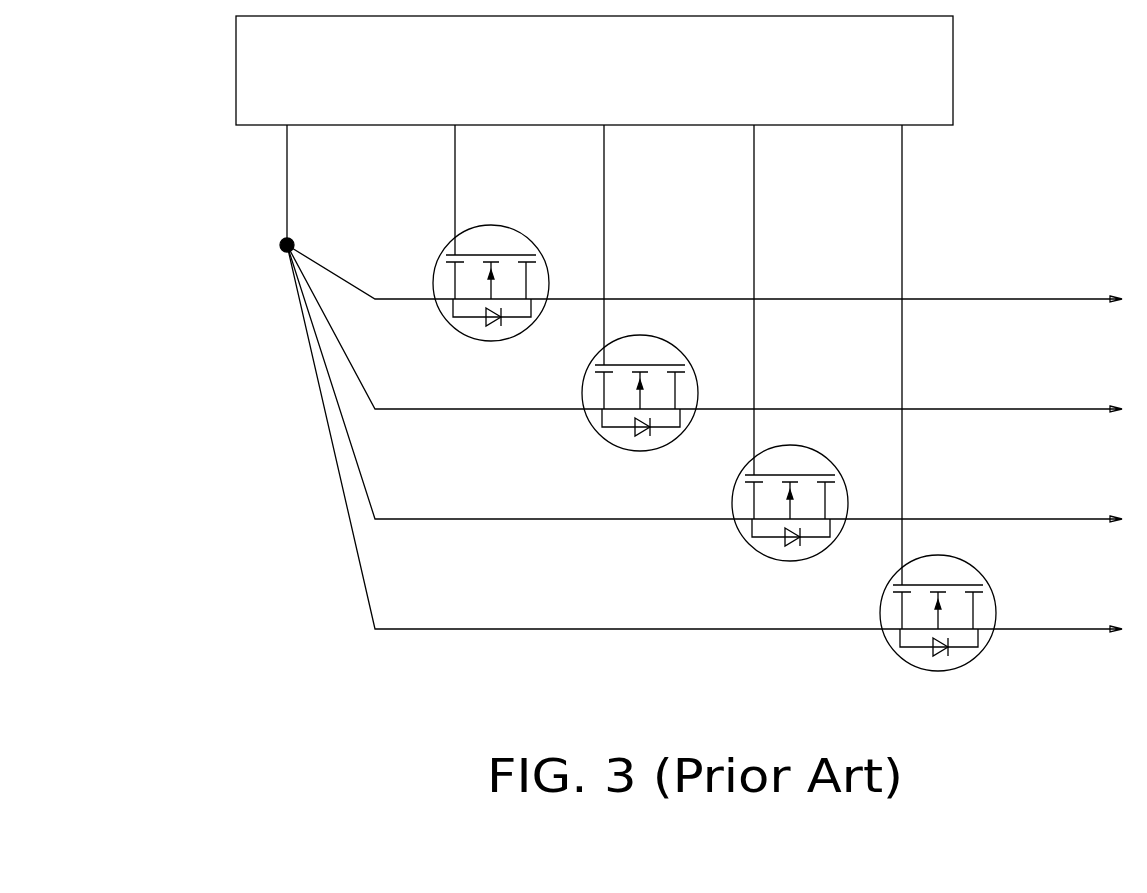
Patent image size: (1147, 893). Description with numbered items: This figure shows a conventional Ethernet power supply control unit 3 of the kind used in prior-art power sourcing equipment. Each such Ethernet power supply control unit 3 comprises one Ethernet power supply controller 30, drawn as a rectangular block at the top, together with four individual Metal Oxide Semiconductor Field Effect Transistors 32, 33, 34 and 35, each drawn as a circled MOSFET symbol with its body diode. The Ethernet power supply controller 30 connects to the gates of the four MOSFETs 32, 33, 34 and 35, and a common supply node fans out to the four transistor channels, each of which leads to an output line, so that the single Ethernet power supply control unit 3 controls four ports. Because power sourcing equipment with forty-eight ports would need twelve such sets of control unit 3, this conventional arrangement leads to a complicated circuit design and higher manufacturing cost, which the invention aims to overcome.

The Ethernet power supply control unit 3 is at (258, 365).
The Ethernet power supply controller 30 is at (934, 70).
The Metal Oxide Semiconductor Field Effect Transistor 32 is at (497, 232).
The Metal Oxide Semiconductor Field Effect Transistor 33 is at (665, 348).
The Metal Oxide Semiconductor Field Effect Transistor 34 is at (817, 460).
The Metal Oxide Semiconductor Field Effect Transistor 35 is at (965, 568).